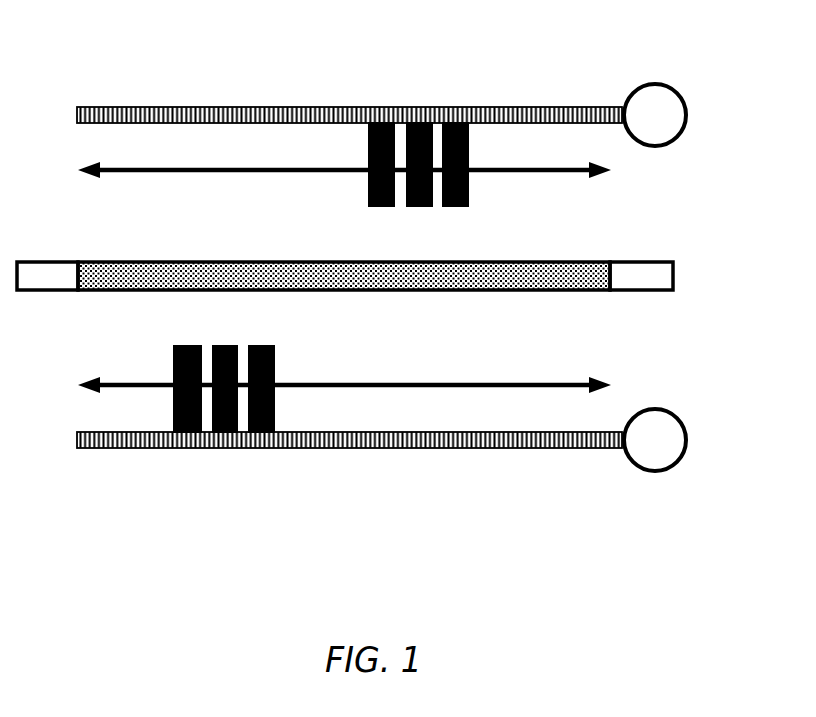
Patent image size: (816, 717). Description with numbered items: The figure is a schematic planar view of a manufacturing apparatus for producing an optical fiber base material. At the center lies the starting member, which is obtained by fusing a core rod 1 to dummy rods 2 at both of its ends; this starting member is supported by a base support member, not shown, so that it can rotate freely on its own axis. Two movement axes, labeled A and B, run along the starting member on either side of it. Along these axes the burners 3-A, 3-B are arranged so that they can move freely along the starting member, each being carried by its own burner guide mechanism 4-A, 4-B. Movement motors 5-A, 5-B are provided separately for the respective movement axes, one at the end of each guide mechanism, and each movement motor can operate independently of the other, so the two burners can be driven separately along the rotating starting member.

The core rod 1 is at (344, 255).
The dummy rods 2 is at (344, 255).
The burner 3-A is at (344, 386).
The burner 3-B is at (344, 171).
The burner guide mechanism 4-A is at (333, 456).
The burner guide mechanism 4-B is at (334, 99).
The movement motor 5-A is at (686, 461).
The movement motor 5-B is at (685, 104).